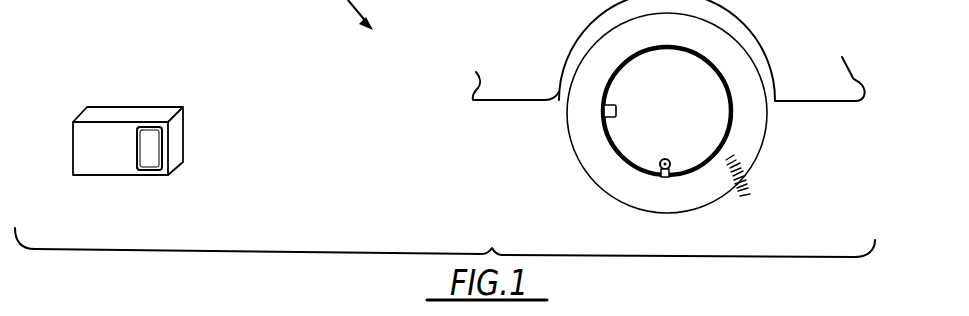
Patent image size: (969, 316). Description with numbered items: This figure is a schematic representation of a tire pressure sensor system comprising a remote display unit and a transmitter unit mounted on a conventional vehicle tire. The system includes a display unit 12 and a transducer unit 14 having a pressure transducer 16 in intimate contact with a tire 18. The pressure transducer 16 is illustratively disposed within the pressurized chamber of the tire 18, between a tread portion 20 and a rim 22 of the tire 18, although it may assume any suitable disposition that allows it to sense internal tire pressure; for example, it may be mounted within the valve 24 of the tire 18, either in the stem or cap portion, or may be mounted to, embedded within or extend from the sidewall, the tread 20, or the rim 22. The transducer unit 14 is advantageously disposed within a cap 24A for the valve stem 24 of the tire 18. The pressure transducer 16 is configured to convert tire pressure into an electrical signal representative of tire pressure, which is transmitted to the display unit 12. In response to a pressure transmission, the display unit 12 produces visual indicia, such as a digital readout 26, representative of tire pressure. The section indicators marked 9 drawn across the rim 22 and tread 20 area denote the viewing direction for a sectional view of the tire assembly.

The display unit 12 is at (143, 80).
The digital display 26 is at (137, 160).
The indicator element 14 is at (624, 97).
The housing 16 is at (598, 113).
The outer ring 18 is at (767, 115).
The inner ring 22 is at (733, 135).
The hatched portion 20 is at (752, 172).
The sensor 24 is at (660, 174).
The sensor head 24A is at (658, 164).
The section indicator 9 is at (642, 135).